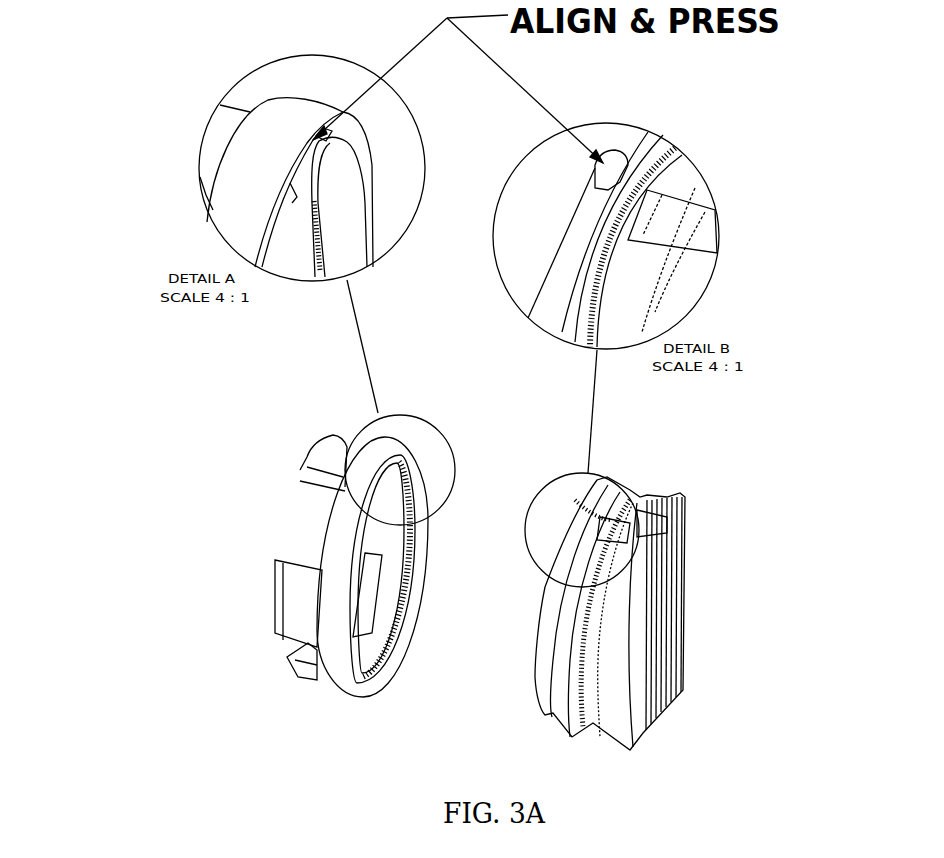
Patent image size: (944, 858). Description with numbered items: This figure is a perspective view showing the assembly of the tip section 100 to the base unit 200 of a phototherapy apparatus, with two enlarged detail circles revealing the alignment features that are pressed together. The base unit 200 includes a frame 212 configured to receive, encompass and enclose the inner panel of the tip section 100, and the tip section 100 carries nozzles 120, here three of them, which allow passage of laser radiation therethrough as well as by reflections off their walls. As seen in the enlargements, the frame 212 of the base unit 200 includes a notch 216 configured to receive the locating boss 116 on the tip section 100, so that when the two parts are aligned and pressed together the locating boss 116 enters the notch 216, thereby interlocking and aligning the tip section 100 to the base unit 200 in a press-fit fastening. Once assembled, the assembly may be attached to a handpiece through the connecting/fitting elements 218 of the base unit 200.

The tip section 100 is at (688, 582).
The locating boss 116 is at (600, 173).
The nozzles 120 is at (617, 637).
The base unit 200 is at (291, 556).
The frame 212 is at (262, 180).
The notch 216 is at (316, 131).
The connecting/fitting elements 218 is at (298, 593).